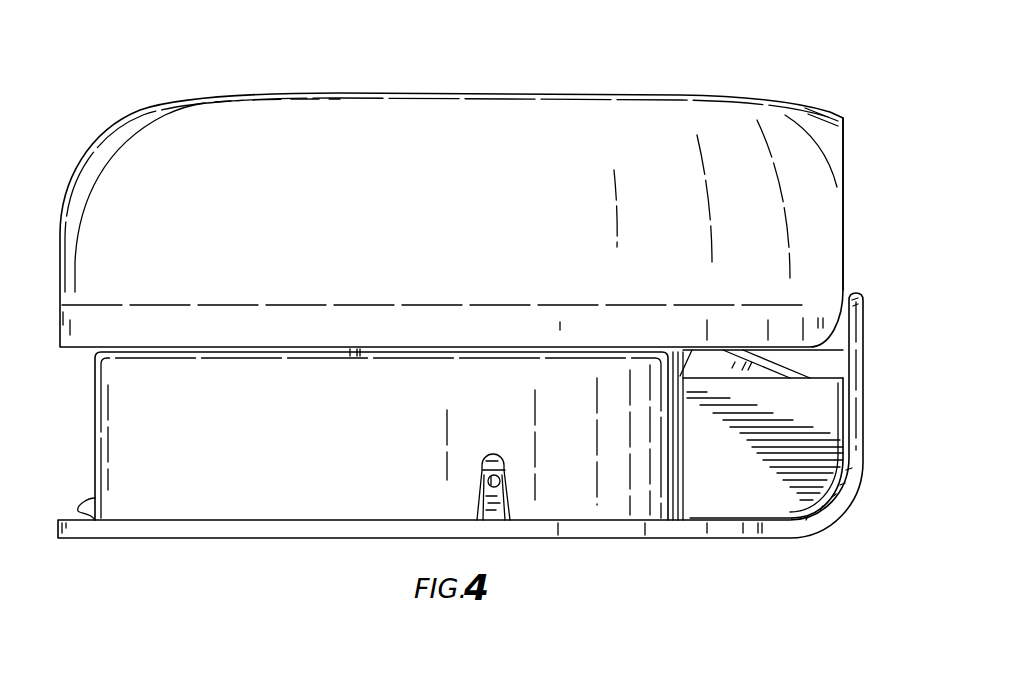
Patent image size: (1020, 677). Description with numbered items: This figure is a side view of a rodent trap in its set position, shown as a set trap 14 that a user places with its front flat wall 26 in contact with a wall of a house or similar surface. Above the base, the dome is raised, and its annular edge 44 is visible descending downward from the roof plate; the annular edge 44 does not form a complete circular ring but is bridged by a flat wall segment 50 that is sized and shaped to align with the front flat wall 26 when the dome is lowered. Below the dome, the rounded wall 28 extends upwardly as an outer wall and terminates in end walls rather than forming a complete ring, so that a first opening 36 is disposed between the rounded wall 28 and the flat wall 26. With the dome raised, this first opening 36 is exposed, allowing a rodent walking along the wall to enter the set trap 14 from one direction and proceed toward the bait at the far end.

The set trap 14 is at (142, 72).
The annular edge 44 is at (143, 244).
The flat wall segment 50 is at (845, 185).
The rounded wall 28 is at (142, 438).
The first opening 36 is at (756, 481).
The flat wall 26 is at (863, 368).